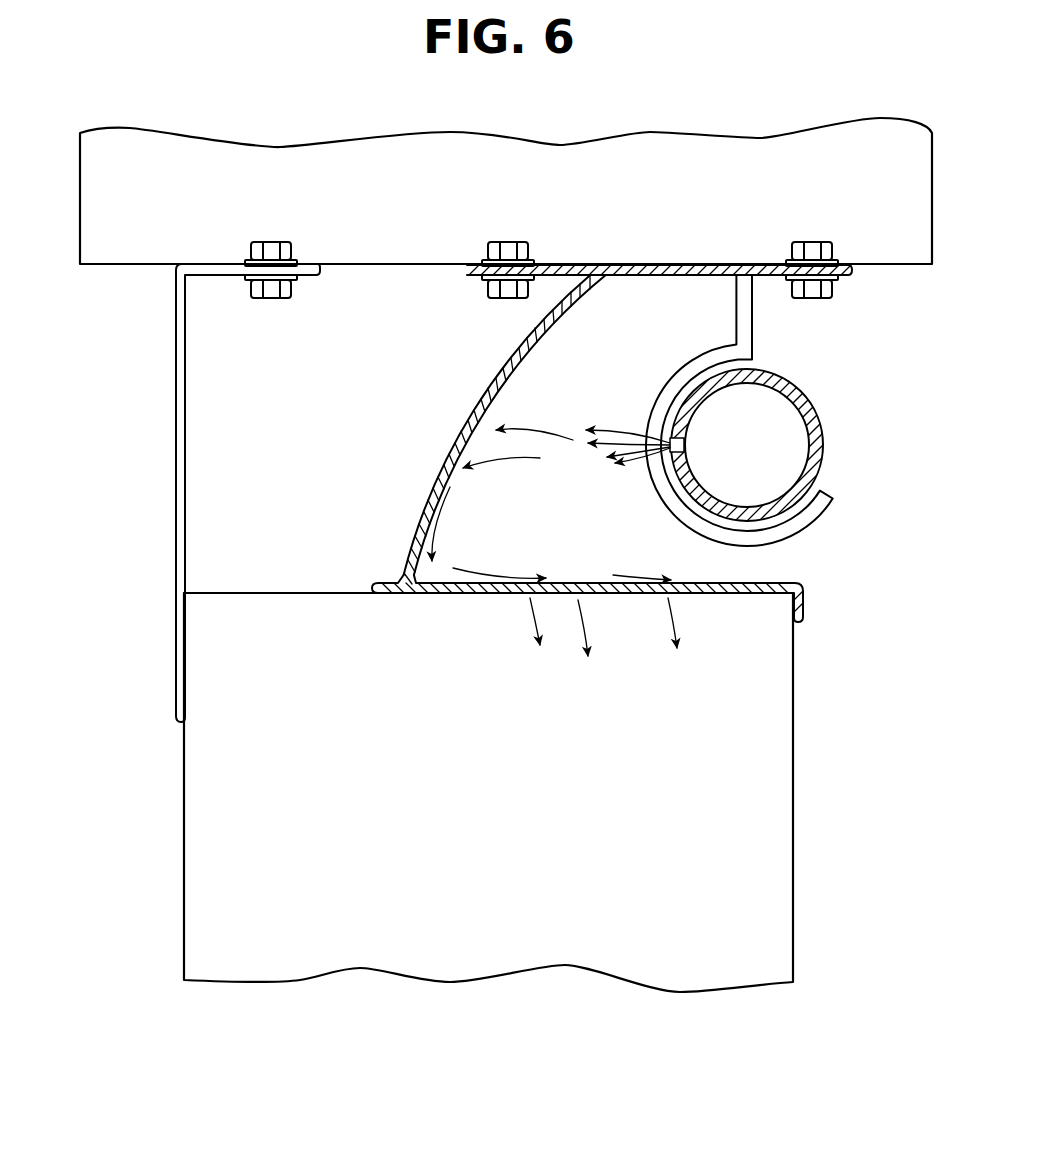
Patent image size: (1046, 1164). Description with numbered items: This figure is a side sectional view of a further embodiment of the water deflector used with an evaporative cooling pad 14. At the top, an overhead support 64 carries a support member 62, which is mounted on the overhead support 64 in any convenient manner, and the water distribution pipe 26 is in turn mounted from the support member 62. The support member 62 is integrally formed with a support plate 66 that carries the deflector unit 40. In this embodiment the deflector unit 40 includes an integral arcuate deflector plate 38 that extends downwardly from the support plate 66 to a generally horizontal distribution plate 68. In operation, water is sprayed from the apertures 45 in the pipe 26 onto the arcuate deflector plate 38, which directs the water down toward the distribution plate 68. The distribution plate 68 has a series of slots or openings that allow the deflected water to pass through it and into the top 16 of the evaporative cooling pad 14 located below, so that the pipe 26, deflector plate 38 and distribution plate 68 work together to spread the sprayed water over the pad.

The evaporative cooling pad 14 is at (780, 873).
The top of evaporative cooling pad 16 is at (740, 595).
The water distribution pipe 26 is at (790, 490).
The arcuate deflector plate 38 is at (430, 490).
The deflector unit 40 is at (593, 465).
The apertures 45 is at (684, 445).
The support member 62 is at (743, 337).
The overhead support 64 is at (903, 266).
The support plate 66 is at (665, 275).
The distribution plate 68 is at (778, 583).